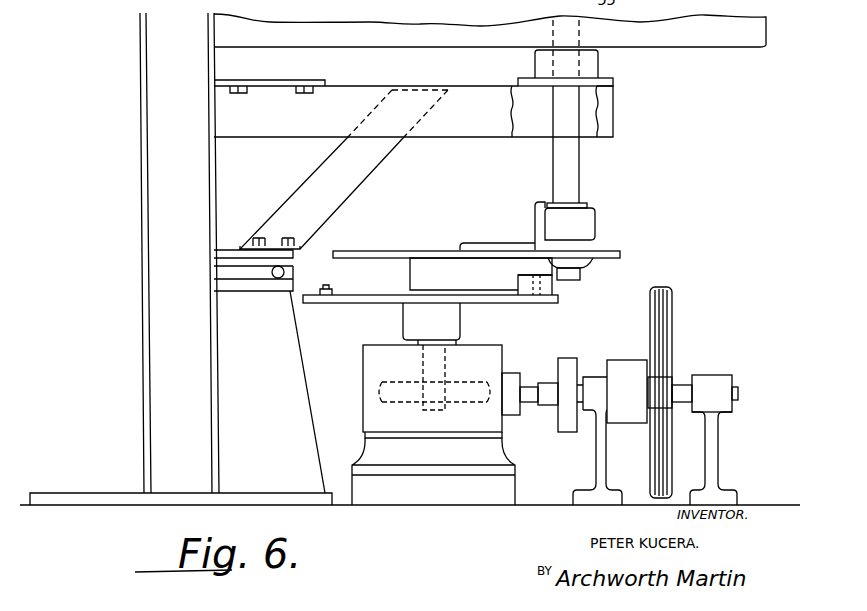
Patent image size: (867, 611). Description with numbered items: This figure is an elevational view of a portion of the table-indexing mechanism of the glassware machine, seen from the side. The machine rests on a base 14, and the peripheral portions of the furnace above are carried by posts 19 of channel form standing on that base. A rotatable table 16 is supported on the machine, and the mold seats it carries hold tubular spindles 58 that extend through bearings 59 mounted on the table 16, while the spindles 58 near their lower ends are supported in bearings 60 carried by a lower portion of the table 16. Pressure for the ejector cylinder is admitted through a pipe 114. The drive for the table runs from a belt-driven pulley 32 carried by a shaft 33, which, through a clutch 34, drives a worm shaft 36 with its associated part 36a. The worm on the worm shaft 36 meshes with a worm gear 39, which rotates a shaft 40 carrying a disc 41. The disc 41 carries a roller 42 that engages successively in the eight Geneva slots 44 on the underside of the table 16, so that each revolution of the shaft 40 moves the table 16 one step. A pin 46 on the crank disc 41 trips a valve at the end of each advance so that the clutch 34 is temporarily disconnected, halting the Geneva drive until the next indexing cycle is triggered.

The base 14 is at (777, 504).
The table 16 is at (613, 123).
The posts 19 is at (158, 273).
The pulley 32 is at (672, 303).
The shaft 33 is at (685, 385).
The clutch 34 is at (623, 370).
The worm shaft 36 is at (530, 388).
The disc 36a is at (567, 433).
The worm gear 39 is at (380, 382).
The shaft 40 is at (450, 360).
The disc 41 is at (388, 306).
The roller 42 is at (518, 283).
The Geneva slots 44 is at (410, 275).
The pin 46 is at (325, 287).
The tubular spindles 58 is at (575, 171).
The bearings 59 is at (535, 68).
The bearings 60 is at (595, 218).
The pipe 114 is at (356, 2).